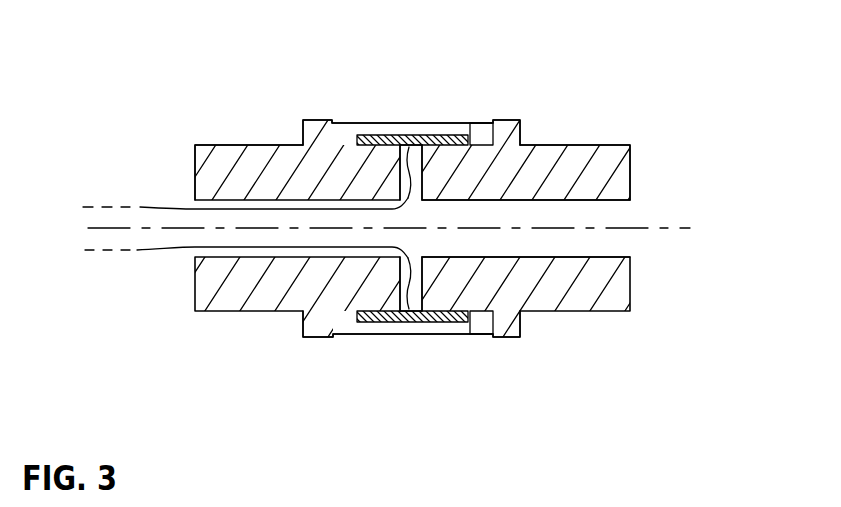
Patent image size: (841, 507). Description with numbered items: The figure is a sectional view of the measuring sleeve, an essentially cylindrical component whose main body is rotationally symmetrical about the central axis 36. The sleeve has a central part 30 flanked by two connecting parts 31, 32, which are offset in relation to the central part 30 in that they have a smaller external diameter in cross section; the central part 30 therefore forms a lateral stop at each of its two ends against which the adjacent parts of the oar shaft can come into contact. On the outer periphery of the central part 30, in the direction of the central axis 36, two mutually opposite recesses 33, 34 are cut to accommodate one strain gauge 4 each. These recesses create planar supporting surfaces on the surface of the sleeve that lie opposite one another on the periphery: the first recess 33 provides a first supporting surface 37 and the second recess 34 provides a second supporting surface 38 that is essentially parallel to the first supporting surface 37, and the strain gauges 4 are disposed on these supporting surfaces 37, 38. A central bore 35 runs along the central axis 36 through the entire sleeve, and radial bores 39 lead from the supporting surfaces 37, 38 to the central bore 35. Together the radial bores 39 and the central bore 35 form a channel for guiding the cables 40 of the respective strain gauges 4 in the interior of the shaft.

The central part 30 is at (505, 338).
The connecting part 31 is at (600, 145).
The connecting part 32 is at (220, 145).
The first recess 33 is at (362, 362).
The second recess 34 is at (377, 105).
The central bore 35 is at (617, 247).
The central axis 36 is at (677, 225).
The first supporting surface 37 is at (477, 322).
The second supporting surface 38 is at (471, 142).
The radial bores 39 is at (400, 175).
The cables 40 is at (143, 207).
The strain gauge 4 is at (421, 140).